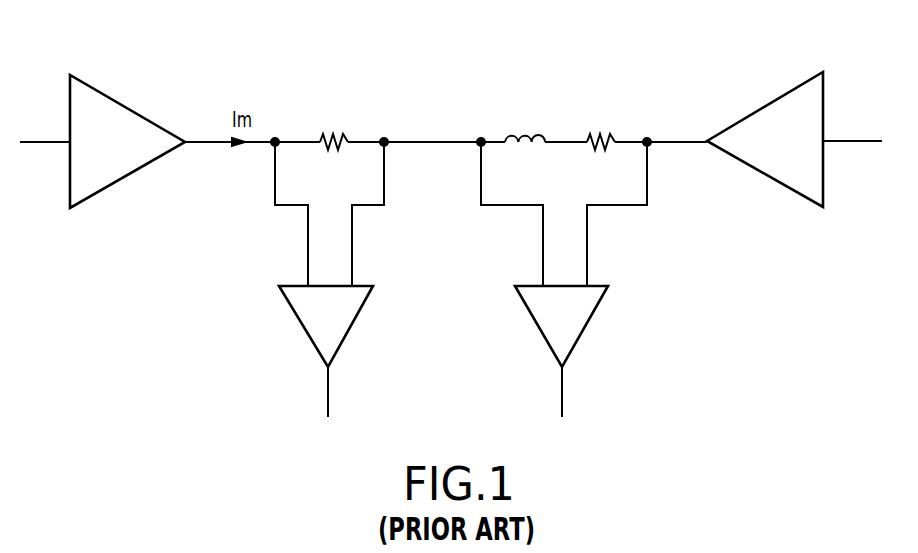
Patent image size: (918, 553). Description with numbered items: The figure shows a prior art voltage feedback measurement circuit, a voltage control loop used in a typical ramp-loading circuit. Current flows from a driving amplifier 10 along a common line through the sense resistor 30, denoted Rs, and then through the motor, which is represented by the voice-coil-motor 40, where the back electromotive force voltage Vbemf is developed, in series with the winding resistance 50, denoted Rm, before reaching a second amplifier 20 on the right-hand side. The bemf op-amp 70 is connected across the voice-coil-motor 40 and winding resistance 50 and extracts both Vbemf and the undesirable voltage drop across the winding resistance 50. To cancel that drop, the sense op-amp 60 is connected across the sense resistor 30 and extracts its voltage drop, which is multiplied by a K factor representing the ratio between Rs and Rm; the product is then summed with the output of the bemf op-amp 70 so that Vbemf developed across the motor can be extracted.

The first amplifier 10 is at (125, 117).
The second amplifier 20 is at (765, 119).
The sense resistor 30 is at (345, 139).
The voice-coil-motor 40 is at (527, 146).
The winding resistance 50 is at (610, 138).
The sense op-amp 60 is at (348, 305).
The bemf op-amp 70 is at (583, 305).